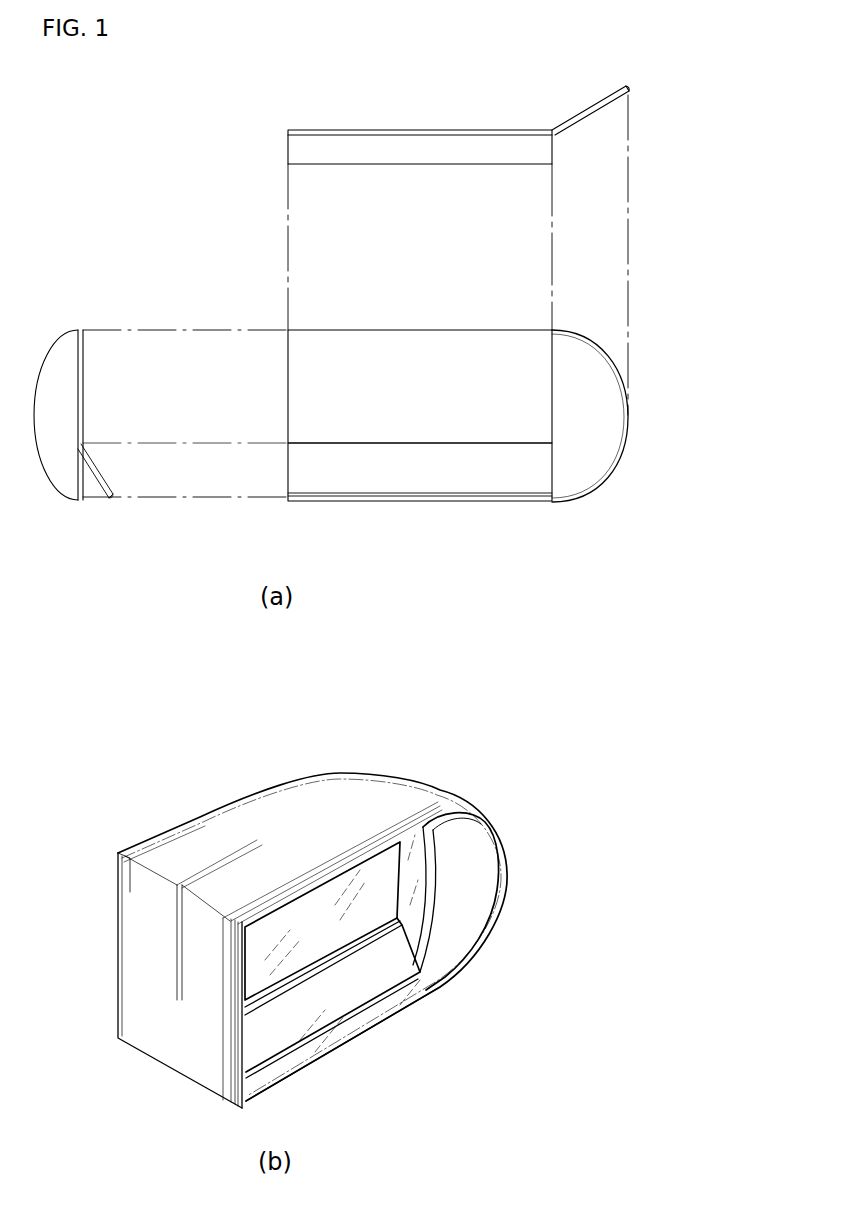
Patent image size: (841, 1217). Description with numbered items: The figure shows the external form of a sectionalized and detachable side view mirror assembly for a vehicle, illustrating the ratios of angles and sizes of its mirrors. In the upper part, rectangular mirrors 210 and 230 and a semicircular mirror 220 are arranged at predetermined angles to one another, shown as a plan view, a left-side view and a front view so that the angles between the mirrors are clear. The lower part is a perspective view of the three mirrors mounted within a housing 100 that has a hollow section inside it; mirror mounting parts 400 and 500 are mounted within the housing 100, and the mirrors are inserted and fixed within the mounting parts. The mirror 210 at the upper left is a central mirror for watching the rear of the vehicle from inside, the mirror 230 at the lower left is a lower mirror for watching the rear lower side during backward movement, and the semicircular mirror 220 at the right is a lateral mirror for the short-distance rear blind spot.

The housing 100 is at (392, 798).
The central mirror 210 is at (420, 360).
The lateral mirror 220 is at (590, 435).
The lower mirror 230 is at (438, 467).
The mirror mounting part 400 is at (433, 842).
The mirror mounting part 500 is at (330, 1025).